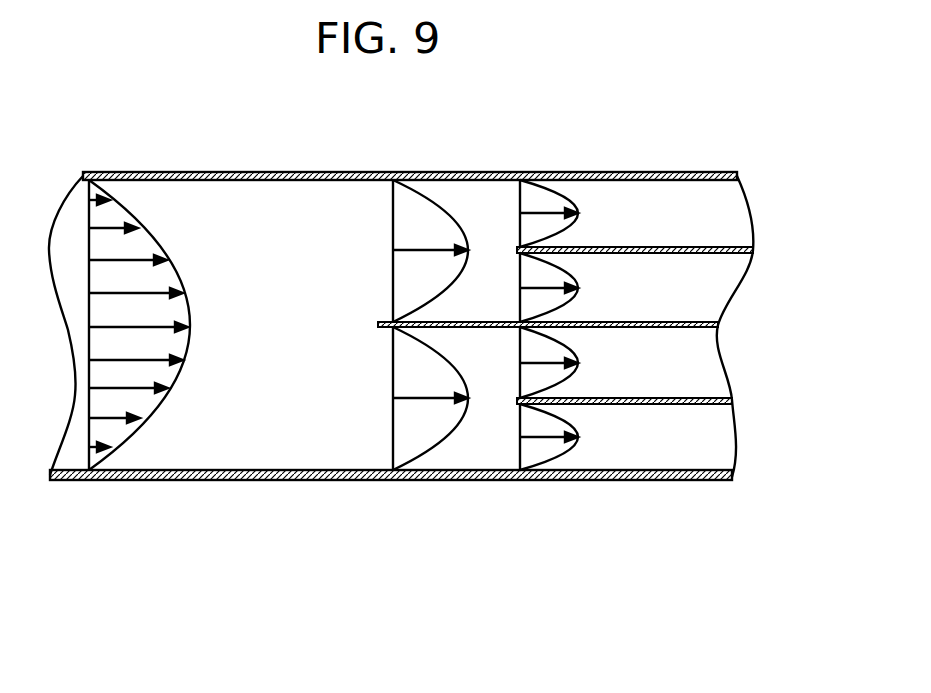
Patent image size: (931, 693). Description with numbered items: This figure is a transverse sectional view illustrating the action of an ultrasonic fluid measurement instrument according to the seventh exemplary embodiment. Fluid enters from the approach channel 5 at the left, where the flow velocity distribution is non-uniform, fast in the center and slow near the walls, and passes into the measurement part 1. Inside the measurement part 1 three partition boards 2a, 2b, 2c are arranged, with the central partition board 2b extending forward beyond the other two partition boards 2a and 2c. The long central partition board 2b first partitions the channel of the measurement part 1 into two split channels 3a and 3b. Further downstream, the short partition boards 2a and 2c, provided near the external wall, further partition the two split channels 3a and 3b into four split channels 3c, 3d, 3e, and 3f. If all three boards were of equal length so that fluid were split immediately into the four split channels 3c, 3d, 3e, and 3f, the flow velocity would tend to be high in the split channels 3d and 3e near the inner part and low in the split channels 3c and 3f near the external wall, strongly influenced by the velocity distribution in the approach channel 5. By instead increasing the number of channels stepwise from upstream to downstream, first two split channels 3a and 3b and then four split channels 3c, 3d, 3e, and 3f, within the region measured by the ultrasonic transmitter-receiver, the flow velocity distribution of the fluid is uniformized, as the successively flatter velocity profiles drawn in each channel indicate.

The measurement part 1 is at (463, 173).
The partition board 2a is at (753, 250).
The central partition board 2b is at (718, 325).
The partition board 2c is at (732, 400).
The split channel 3a is at (493, 210).
The split channel 3b is at (485, 453).
The split channel 3c is at (732, 220).
The split channel 3d is at (718, 293).
The split channel 3e is at (707, 370).
The split channel 3f is at (720, 445).
The approach channel 5 is at (262, 445).